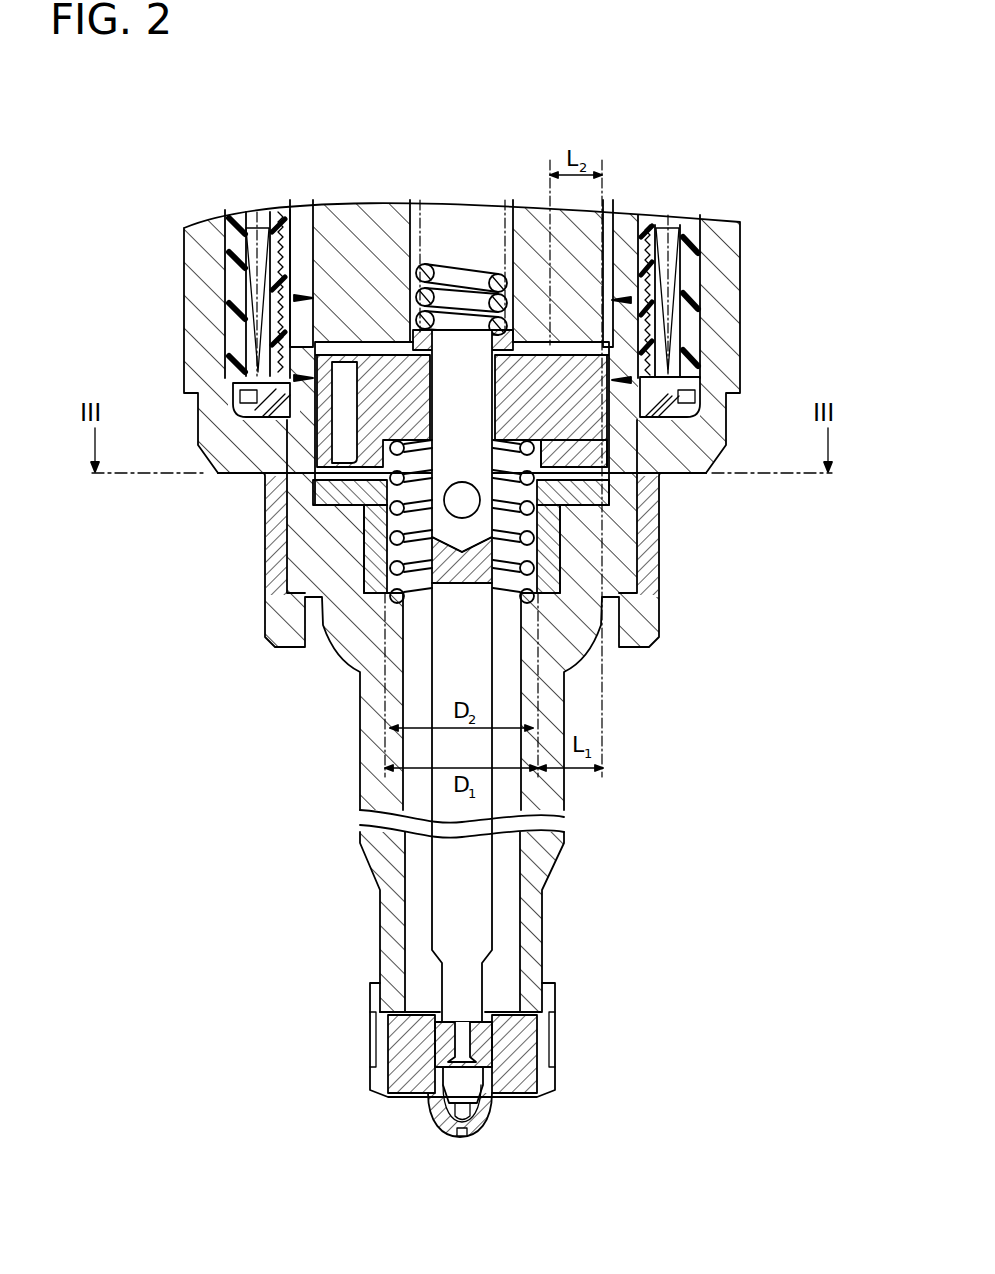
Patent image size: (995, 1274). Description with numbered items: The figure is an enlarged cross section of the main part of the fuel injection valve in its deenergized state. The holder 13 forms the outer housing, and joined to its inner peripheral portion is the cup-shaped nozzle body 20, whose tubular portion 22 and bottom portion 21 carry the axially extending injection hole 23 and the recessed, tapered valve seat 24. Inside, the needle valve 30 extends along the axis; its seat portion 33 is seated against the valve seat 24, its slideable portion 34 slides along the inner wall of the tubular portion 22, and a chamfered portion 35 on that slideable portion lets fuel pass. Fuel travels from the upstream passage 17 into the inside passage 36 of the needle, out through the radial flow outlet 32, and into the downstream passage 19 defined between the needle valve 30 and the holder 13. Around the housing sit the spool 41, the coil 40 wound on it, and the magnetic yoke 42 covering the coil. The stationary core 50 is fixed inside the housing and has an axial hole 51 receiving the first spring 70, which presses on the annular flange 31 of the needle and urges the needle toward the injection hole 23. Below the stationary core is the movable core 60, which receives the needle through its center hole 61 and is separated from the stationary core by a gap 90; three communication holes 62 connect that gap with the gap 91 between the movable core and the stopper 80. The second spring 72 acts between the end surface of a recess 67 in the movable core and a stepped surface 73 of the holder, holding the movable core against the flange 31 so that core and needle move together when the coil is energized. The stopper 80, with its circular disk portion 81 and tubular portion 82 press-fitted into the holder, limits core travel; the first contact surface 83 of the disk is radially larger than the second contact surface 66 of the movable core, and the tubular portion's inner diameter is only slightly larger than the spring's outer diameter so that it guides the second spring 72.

The holder 13 is at (377, 710).
The upstream passage 17 is at (457, 230).
The downstream passage 19 is at (420, 793).
The nozzle body 20 is at (517, 1083).
The bottom portion 21 is at (480, 1120).
The tubular portion 22 is at (523, 1052).
The injection hole 23 is at (463, 1137).
The valve seat 24 is at (452, 1092).
The needle valve 30 is at (462, 673).
The flange 31 is at (285, 305).
The flow outlet 32 is at (577, 530).
The seat portion 33 is at (443, 1110).
The slideable portion 34 is at (465, 1038).
The chamfered portion 35 is at (447, 1050).
The inside passage 36 is at (640, 408).
The coil 40 is at (677, 258).
The spool 41 is at (640, 280).
The yoke 42 is at (717, 313).
The stationary core 50 is at (360, 253).
The hole 51 is at (507, 247).
The movable core 60 is at (372, 412).
The center hole 61 is at (650, 345).
The communication holes 62 is at (340, 402).
The second contact surface 66 is at (575, 490).
The recess 67 is at (610, 440).
The first spring 70 is at (420, 256).
The second spring 72 is at (390, 549).
The stepped surface 73 is at (390, 577).
The stopper 80 is at (563, 560).
The circular disk portion 81 is at (333, 490).
The tubular portion 82 is at (373, 528).
The first contact surface 83 is at (600, 460).
The gap 90 is at (290, 353).
The gap 91 is at (322, 470).